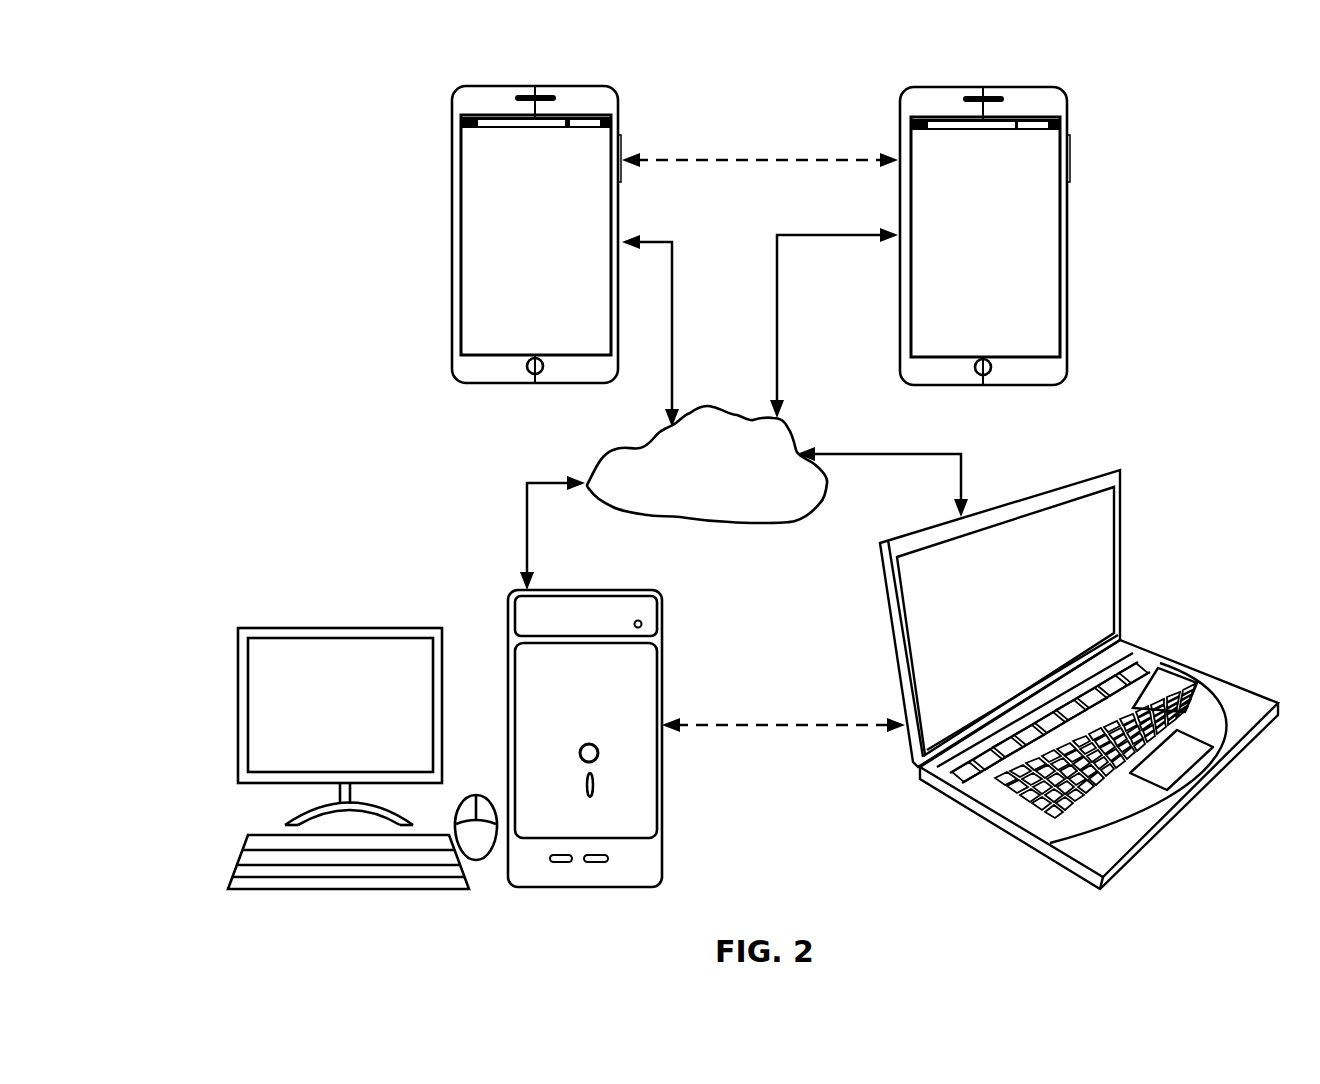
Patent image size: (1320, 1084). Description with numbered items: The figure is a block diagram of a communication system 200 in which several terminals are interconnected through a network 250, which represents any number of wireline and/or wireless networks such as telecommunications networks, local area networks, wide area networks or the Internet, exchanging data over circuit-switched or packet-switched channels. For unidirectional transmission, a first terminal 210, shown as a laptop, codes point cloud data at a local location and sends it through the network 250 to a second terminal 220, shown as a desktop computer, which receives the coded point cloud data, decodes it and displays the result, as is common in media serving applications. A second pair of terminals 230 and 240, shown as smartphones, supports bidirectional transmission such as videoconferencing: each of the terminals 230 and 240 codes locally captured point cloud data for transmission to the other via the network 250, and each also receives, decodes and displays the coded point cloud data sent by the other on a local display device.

The communication system 200 is at (208, 76).
The first terminal 210 is at (1123, 540).
The second terminal 220 is at (661, 846).
The terminal 230 is at (452, 192).
The terminal 240 is at (900, 192).
The network 250 is at (688, 491).